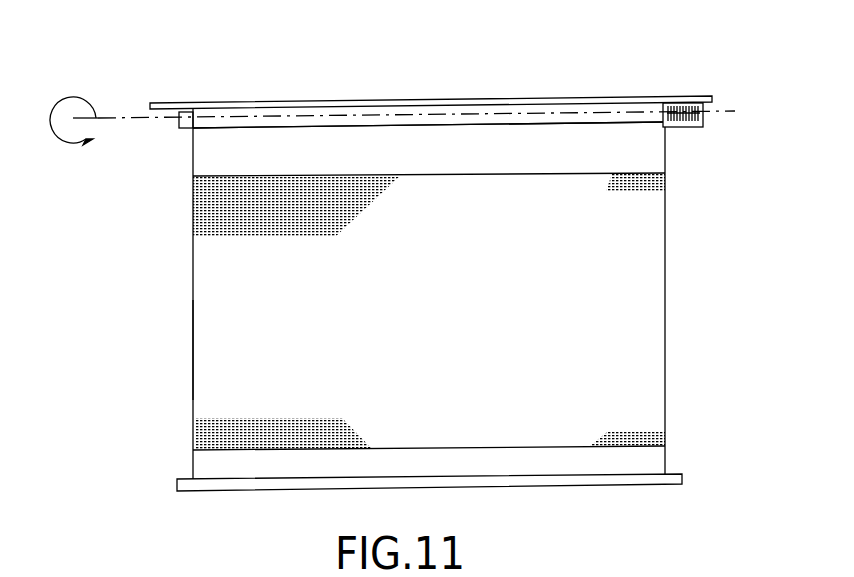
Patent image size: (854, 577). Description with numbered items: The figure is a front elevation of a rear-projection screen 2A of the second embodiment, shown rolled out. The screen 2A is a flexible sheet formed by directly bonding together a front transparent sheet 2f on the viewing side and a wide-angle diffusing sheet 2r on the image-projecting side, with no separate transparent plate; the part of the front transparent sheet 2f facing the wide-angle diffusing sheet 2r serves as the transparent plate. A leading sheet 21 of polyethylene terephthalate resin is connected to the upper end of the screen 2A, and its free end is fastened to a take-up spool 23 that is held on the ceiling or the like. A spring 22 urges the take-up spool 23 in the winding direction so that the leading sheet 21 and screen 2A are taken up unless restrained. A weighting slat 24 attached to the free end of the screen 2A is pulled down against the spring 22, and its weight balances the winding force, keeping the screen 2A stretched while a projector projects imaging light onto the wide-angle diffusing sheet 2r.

The rear-projection screen 2A is at (542, 93).
The front transparent sheet 2f is at (240, 278).
The wide-angle diffusing sheet 2r is at (218, 343).
The leading sheet 21 is at (225, 135).
The spring 22 is at (680, 127).
The take-up spool 23 is at (190, 123).
The weighting slat 24 is at (628, 486).